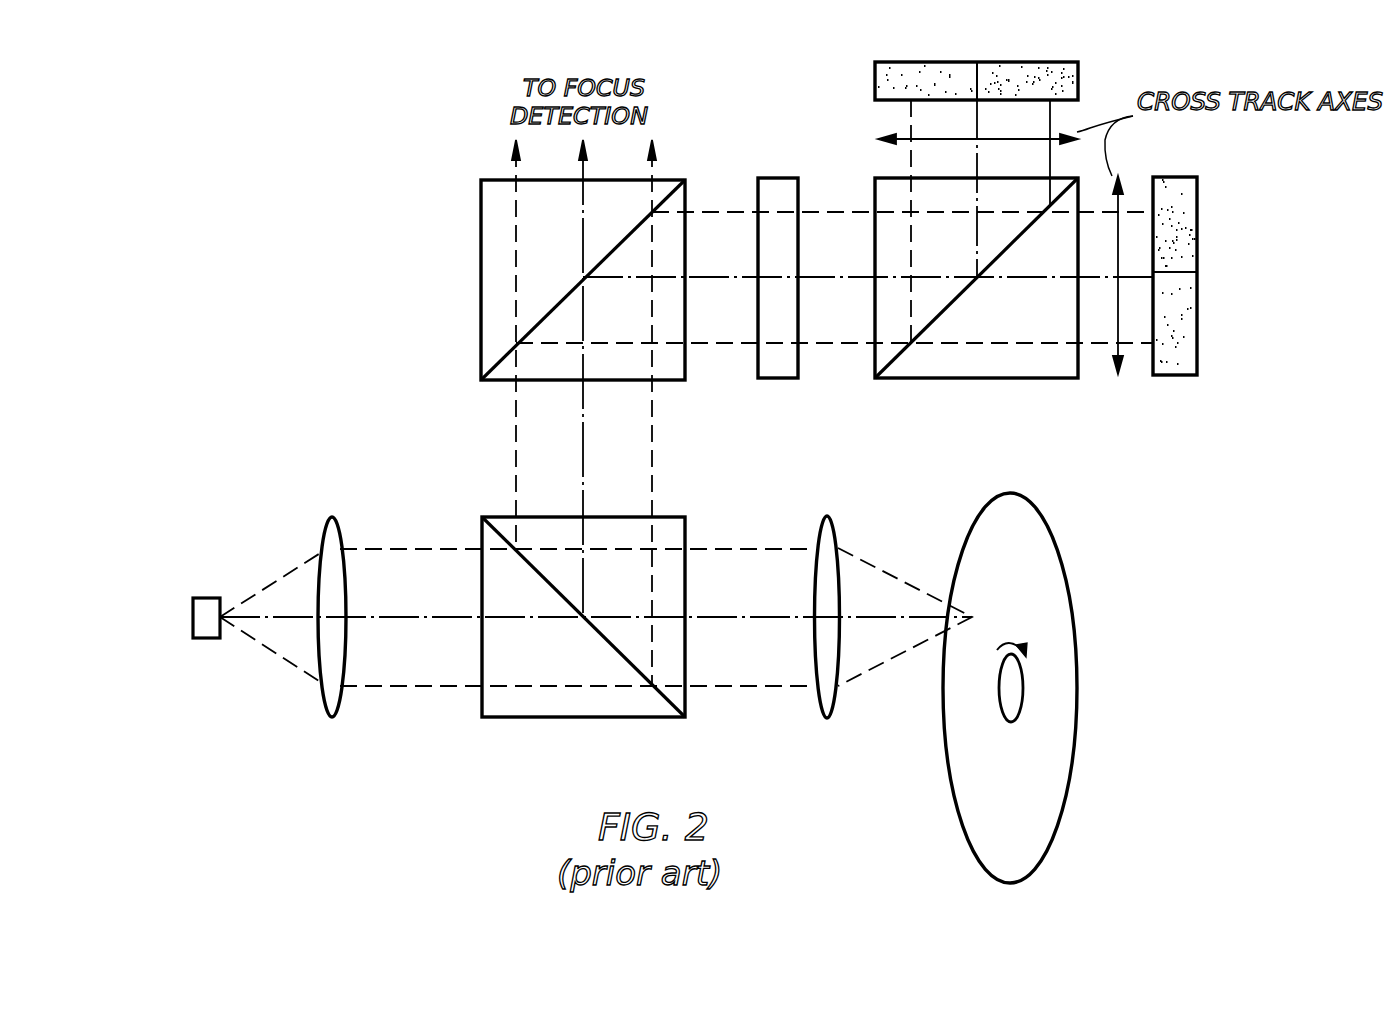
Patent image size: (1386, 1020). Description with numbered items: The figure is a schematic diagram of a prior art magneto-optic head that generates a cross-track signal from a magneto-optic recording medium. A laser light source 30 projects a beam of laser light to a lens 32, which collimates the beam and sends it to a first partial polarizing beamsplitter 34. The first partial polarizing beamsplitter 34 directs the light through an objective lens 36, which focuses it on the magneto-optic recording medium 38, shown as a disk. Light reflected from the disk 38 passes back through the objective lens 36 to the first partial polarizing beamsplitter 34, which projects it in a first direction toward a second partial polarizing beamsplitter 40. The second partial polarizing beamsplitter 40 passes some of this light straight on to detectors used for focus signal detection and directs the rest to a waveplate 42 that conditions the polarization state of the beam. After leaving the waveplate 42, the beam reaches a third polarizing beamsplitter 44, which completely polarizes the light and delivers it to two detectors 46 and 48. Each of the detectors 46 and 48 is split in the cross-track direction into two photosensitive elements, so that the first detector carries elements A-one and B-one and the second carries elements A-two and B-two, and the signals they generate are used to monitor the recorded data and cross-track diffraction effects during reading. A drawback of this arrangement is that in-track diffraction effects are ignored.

The laser light source 30 is at (204, 598).
The lens 32 is at (341, 531).
The first partial polarizing beamsplitter 34 is at (580, 717).
The objective lens 36 is at (836, 524).
The magneto-optic recording medium 38 is at (1058, 550).
The second partial polarizing beamsplitter 40 is at (481, 222).
The waveplate 42 is at (778, 178).
The third polarizing beamsplitter 44 is at (1032, 378).
The detector 46 is at (875, 82).
The detector 48 is at (1183, 376).